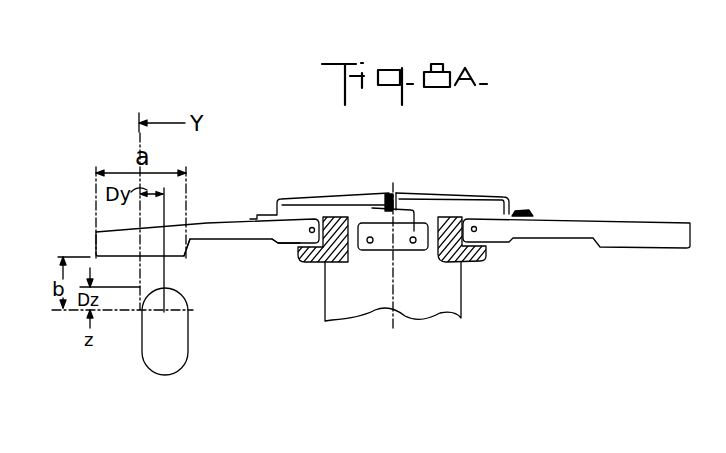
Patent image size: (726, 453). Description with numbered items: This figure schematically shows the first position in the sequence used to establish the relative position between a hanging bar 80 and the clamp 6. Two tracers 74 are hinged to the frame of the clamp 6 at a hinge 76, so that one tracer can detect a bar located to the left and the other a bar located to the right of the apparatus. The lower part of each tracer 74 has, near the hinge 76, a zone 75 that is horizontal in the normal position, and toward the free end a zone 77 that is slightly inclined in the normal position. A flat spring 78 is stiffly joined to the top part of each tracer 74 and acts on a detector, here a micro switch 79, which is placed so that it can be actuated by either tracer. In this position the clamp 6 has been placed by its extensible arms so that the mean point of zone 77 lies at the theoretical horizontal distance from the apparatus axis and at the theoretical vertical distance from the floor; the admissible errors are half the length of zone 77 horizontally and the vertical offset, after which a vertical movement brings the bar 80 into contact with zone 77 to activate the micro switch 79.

The clamp 6 is at (453, 302).
The tracers 74 is at (213, 225).
The zone 75 is at (250, 243).
The hinge 76 is at (312, 227).
The zone 77 is at (178, 257).
The flat spring 78 is at (376, 192).
The micro switch 79 is at (370, 250).
The bar 80 is at (173, 372).